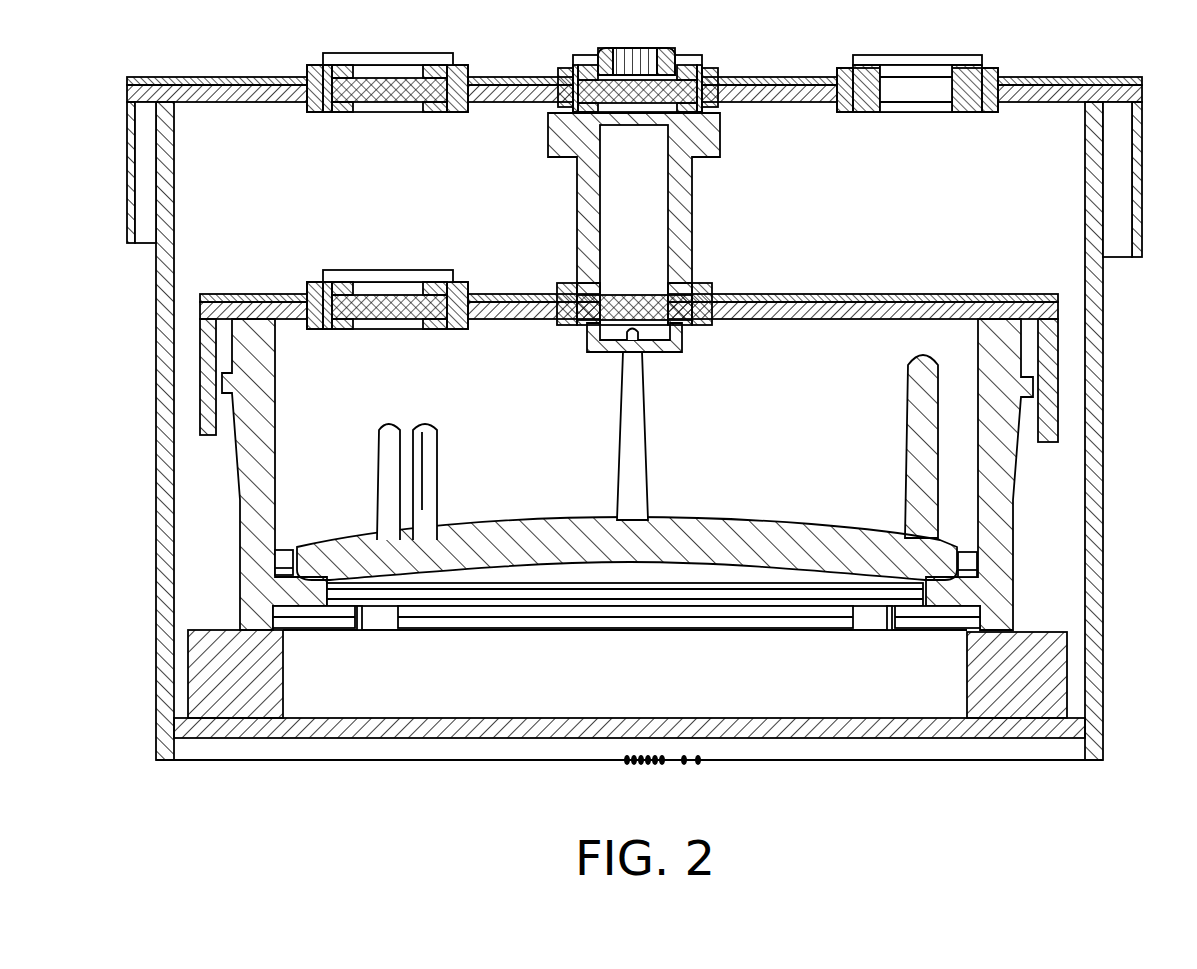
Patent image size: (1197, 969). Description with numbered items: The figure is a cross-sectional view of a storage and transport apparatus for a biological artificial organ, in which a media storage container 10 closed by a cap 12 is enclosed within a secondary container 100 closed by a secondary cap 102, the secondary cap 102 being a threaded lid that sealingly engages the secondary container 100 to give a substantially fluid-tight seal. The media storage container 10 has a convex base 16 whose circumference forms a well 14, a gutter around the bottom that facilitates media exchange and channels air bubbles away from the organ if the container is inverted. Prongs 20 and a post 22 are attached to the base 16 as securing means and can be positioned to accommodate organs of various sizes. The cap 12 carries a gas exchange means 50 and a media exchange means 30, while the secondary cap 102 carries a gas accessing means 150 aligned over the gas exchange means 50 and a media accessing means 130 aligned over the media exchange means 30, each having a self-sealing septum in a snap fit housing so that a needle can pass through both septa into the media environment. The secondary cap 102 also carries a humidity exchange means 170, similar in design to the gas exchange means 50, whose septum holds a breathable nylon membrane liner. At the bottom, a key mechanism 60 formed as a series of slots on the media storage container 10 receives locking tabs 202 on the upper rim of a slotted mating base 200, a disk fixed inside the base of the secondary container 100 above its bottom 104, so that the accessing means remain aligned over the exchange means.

The secondary container 100 is at (1105, 400).
The secondary cap 102 is at (231, 77).
The chamber bottom plate 104 is at (992, 760).
The media storage container 10 is at (238, 580).
The cap 12 is at (1022, 296).
The well 14 is at (282, 560).
The convex base 16 is at (498, 528).
The prongs 20 is at (378, 505).
The post 22 is at (908, 403).
The media exchange means 30 is at (400, 270).
The gas exchange means 50 is at (705, 266).
The key mechanism 60 is at (362, 630).
The media accessing means 130 is at (400, 52).
The gas accessing means 150 is at (685, 52).
The humidity exchange means 170 is at (960, 54).
The slotted mating base 200 is at (627, 674).
The locking tabs 202 is at (871, 632).